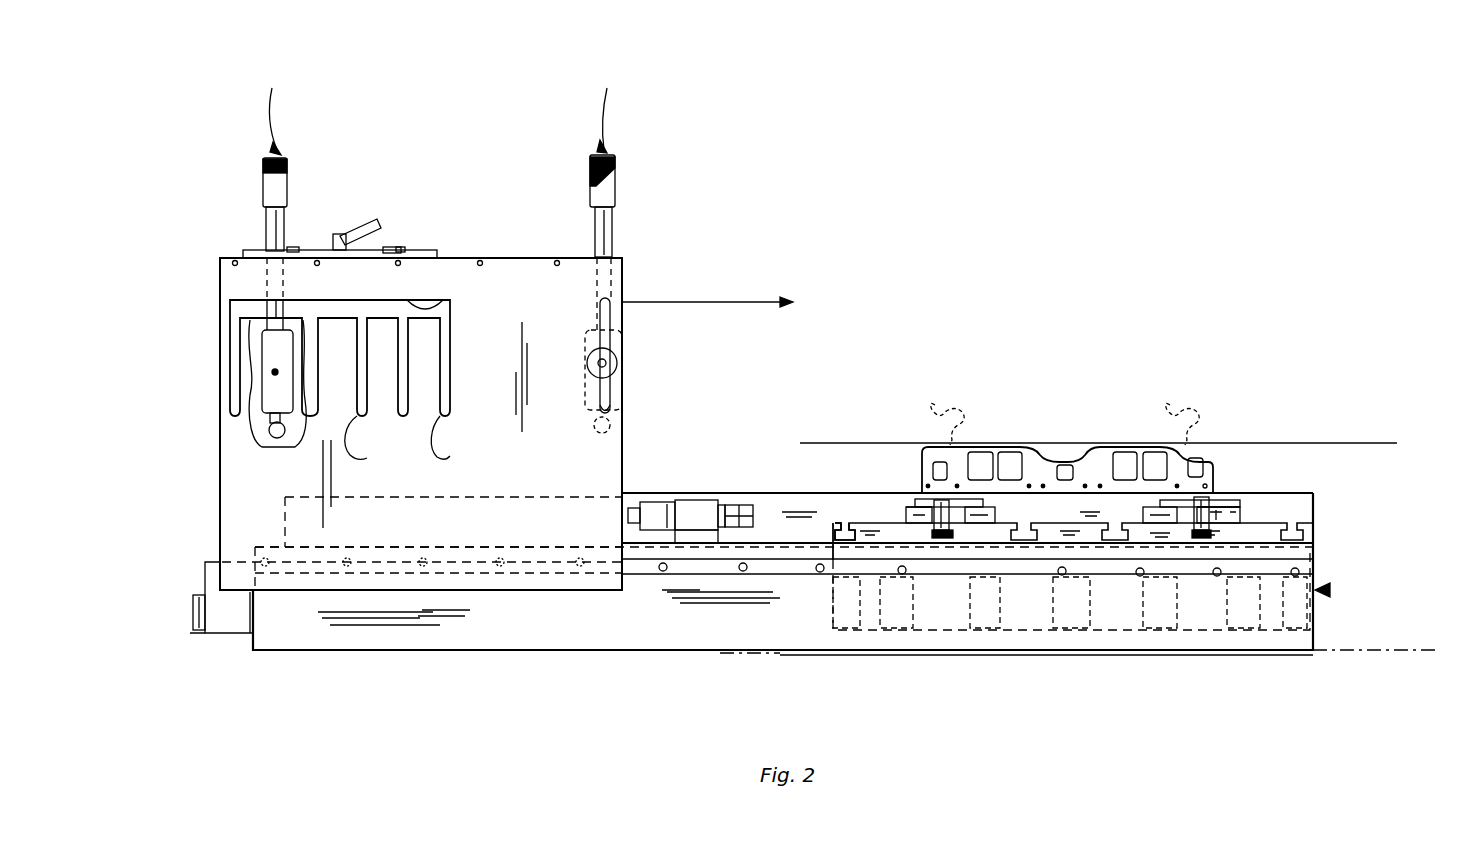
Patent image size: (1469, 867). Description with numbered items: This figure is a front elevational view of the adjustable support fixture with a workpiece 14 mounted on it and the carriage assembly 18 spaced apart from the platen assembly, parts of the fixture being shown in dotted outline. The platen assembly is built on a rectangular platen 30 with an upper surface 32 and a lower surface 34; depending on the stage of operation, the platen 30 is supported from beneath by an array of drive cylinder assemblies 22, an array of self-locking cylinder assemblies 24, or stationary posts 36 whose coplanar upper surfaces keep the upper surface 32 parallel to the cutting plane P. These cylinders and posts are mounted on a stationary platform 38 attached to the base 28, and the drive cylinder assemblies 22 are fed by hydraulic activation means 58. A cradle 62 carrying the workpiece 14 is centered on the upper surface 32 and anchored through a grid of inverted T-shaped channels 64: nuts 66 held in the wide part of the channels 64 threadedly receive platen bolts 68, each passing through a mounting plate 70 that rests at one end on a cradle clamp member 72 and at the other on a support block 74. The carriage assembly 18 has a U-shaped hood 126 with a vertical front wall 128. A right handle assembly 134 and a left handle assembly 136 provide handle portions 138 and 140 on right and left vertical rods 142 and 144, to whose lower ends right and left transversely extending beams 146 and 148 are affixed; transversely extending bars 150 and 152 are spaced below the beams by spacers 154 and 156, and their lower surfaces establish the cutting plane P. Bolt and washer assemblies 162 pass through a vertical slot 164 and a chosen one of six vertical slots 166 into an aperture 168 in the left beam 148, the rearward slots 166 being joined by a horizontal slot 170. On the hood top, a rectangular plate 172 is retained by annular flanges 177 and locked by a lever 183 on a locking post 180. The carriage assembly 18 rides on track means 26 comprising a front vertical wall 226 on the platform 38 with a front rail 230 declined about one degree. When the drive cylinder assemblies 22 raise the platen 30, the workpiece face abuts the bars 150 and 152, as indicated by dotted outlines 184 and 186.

The workpiece 14 is at (1085, 447).
The carriage assembly 18 is at (548, 250).
The drive cylinder assemblies 22 is at (990, 630).
The self-locking cylinder assemblies 24 is at (915, 630).
The track means 26 is at (362, 655).
The base 28 is at (1330, 590).
The platen 30 is at (1318, 512).
The upper surface 32 is at (1265, 490).
The lower surface 34 is at (1316, 563).
The stationary posts 36 is at (1318, 607).
The stationary platform 38 is at (1300, 655).
The hydraulic activation means 58 is at (694, 500).
The cradle 62 is at (1185, 497).
The inverted T-shaped channels 64 is at (846, 526).
The nuts 66 is at (932, 535).
The platen bolts 68 is at (948, 522).
The mounting plate 70 is at (912, 515).
The cradle clamp member 72 is at (980, 512).
The support block 74 is at (910, 517).
The hood 126 is at (252, 517).
The vertical front wall 128 is at (243, 276).
The right handle assembly 134 is at (607, 107).
The left handle assembly 136 is at (269, 108).
The right handle portion 138 is at (608, 185).
The left handle portion 140 is at (275, 182).
The right vertical rod 142 is at (613, 222).
The left vertical rod 144 is at (272, 222).
The right transversely extending beam 146 is at (612, 338).
The left transversely extending beam 148 is at (275, 340).
The right transversely extending bar 150 is at (602, 433).
The left transversely extending bar 152 is at (270, 438).
The right transversely extending spacer 154 is at (612, 405).
The left transversely extending spacer 156 is at (270, 415).
The bolt and washer assemblies 162 is at (612, 362).
The vertical slot 164 is at (600, 312).
The vertical slots 166 is at (232, 412).
The aperture 168 is at (272, 372).
The horizontal slot 170 is at (442, 302).
The rectangular plate 172 is at (252, 253).
The annular flange 177 is at (292, 248).
The locking post 180 is at (394, 250).
The quick-release locking lever 183 is at (357, 225).
The dotted outline 184 is at (1170, 405).
The dotted outline 186 is at (935, 405).
The front vertical wall 226 is at (477, 630).
The front rail 230 is at (680, 580).
The cutting plane P is at (1372, 443).